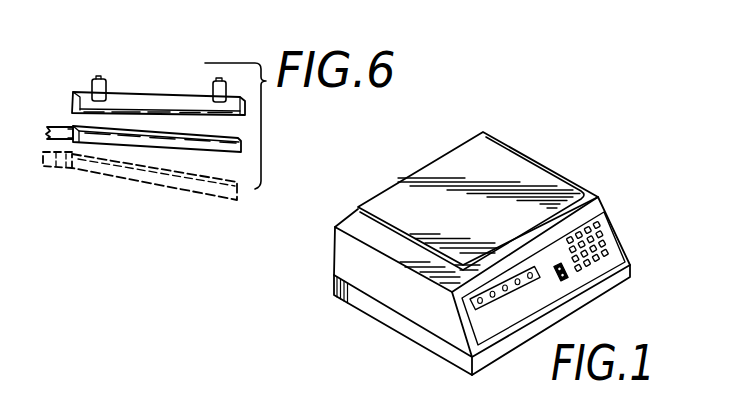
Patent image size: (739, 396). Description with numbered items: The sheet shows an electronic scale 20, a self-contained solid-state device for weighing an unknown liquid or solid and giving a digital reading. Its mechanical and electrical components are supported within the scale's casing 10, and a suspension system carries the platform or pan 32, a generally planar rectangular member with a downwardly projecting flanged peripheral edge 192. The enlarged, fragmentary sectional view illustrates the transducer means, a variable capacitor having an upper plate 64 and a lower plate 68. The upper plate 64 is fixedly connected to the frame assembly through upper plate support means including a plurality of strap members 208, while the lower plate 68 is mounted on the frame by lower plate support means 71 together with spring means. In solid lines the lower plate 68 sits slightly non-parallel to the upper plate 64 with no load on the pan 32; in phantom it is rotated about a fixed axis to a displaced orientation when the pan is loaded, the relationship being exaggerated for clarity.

In FIG. 1, the casing 10 is at (478, 243).
In FIG. 1, the electronic scale 20 is at (365, 184).
In FIG. 1, the pan 32 is at (443, 172).
In FIG. 1, the flanged peripheral edge 192 is at (601, 197).
In FIG. 6, the upper plate 64 is at (159, 93).
In FIG. 6, the lower plate 68 is at (150, 146).
In FIG. 6, the lower plate support means 71 is at (59, 127).
In FIG. 6, the strap members 208 is at (97, 79).